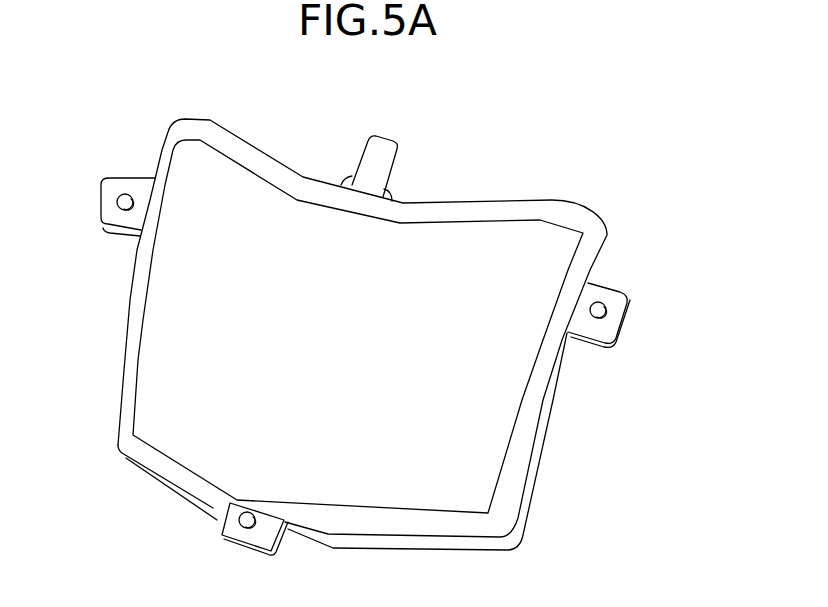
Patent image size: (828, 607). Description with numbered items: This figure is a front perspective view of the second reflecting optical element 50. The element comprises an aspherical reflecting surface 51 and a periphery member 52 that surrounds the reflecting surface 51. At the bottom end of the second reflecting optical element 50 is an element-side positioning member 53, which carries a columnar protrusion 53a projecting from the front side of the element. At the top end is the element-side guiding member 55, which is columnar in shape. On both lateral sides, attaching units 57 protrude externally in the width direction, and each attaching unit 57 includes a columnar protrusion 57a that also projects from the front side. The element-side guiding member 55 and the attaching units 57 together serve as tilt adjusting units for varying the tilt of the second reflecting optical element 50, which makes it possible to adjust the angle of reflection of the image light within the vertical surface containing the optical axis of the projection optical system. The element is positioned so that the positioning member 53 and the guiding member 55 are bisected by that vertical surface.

The second reflecting optical element 50 is at (540, 128).
The aspherical reflecting surface 51 is at (408, 335).
The periphery member 52 is at (580, 219).
The element-side positioning member 53 is at (266, 537).
The columnar protrusion 53a is at (243, 520).
The element-side guiding member 55 is at (383, 150).
The attaching unit 57 is at (128, 182).
The columnar protrusion 57a is at (116, 200).